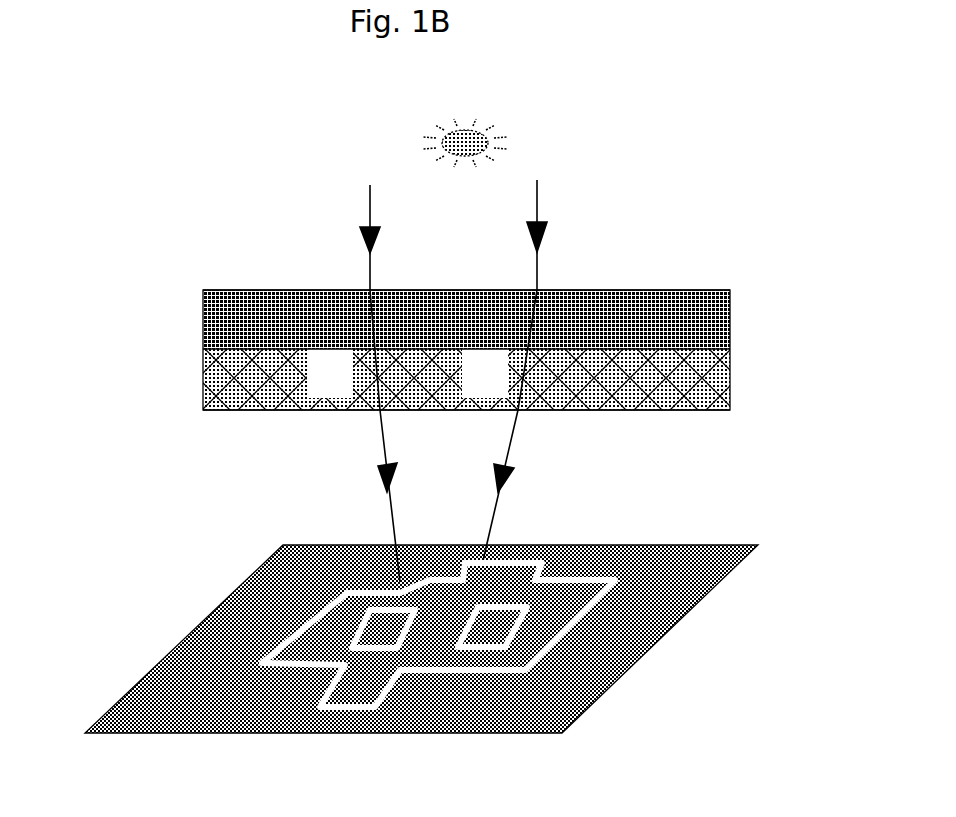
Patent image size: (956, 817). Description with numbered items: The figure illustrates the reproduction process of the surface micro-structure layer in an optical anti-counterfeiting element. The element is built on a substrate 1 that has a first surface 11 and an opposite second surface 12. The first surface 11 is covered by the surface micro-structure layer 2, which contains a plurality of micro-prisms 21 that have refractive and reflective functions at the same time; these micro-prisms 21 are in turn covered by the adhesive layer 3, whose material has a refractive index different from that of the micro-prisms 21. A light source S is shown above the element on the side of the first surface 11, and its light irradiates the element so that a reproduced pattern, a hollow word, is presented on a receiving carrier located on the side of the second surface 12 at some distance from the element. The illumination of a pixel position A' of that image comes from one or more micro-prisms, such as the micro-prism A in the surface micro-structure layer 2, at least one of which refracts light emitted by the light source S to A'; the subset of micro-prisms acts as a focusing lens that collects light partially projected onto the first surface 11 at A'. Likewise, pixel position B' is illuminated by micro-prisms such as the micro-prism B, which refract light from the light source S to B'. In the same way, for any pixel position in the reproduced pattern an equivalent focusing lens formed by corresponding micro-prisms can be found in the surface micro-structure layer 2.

The substrate 1 is at (500, 350).
The first surface 11 is at (731, 338).
The second surface 12 is at (731, 400).
The surface micro-structure layer 2 is at (205, 333).
The micro-prisms 21 is at (297, 328).
The adhesive layer 3 is at (722, 290).
The light source S is at (480, 126).
The micro-prism A is at (330, 373).
The micro-prism B is at (485, 373).
The pixel position A' is at (345, 527).
The pixel position B' is at (503, 587).